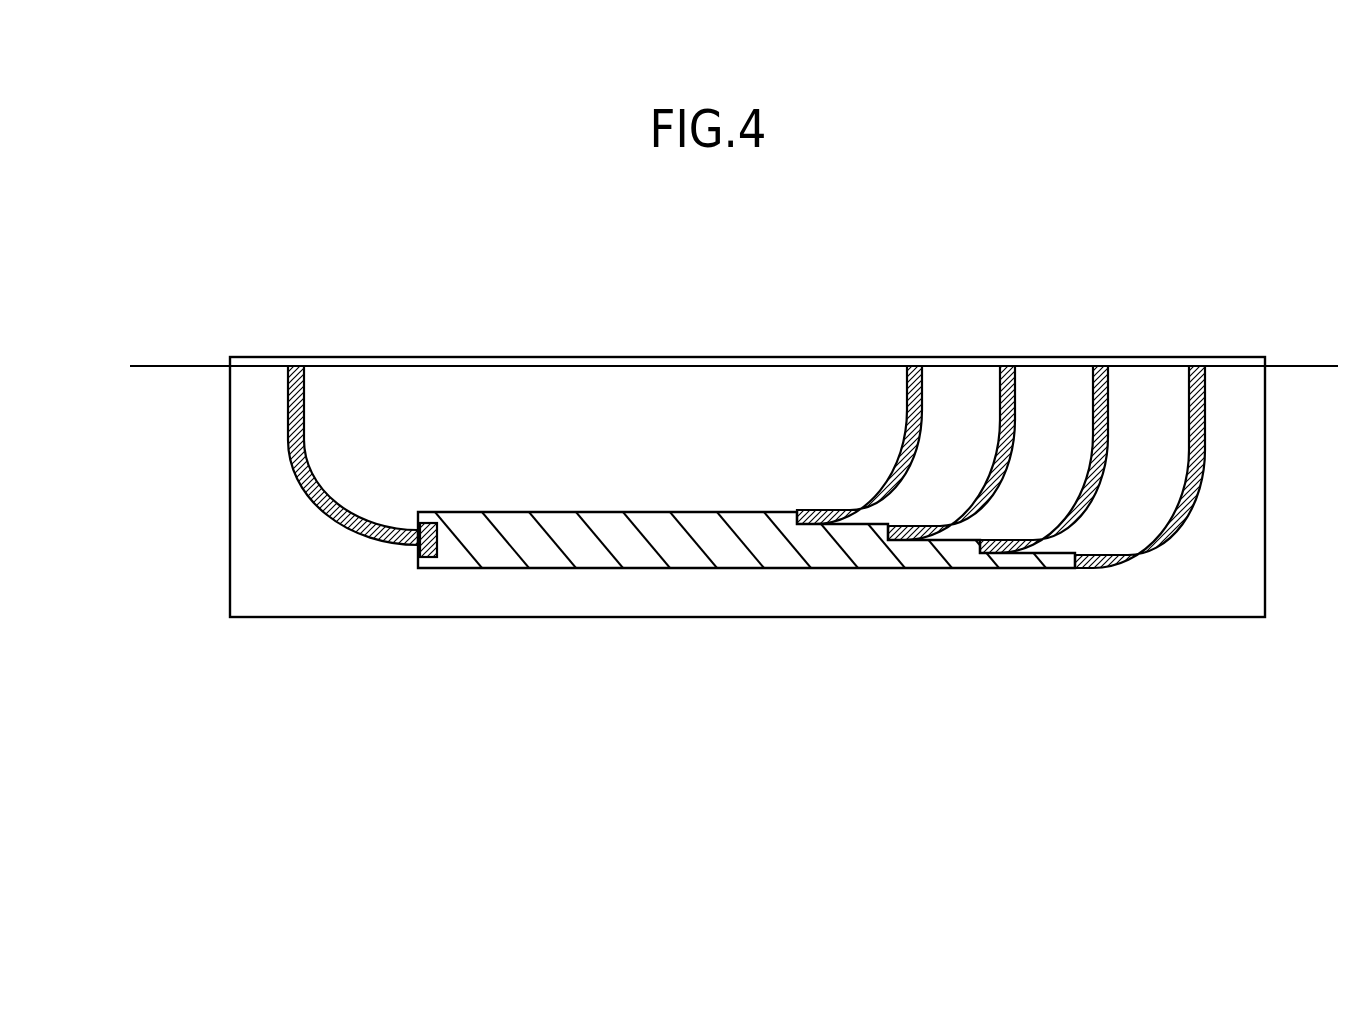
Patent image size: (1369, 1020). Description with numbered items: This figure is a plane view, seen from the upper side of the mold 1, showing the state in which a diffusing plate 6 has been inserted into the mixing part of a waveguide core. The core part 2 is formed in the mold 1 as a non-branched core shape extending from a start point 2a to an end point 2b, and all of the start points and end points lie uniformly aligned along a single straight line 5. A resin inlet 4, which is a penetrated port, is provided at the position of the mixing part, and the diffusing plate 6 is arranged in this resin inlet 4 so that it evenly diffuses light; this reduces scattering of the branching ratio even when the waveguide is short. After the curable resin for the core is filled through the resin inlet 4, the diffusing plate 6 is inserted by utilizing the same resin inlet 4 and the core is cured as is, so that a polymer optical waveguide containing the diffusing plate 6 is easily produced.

The mold 1 is at (262, 587).
The core part 2 is at (347, 496).
The start point 2a is at (347, 425).
The end point 2b is at (907, 350).
The resin inlet 4 is at (622, 568).
The single straight line 5 is at (1305, 366).
The diffusing plate 6 is at (447, 540).